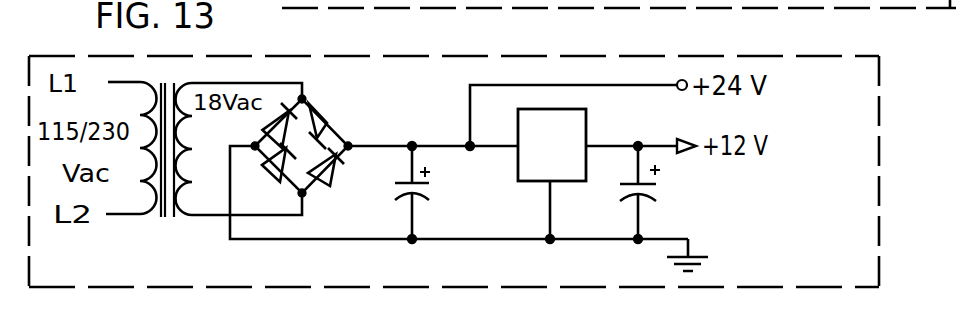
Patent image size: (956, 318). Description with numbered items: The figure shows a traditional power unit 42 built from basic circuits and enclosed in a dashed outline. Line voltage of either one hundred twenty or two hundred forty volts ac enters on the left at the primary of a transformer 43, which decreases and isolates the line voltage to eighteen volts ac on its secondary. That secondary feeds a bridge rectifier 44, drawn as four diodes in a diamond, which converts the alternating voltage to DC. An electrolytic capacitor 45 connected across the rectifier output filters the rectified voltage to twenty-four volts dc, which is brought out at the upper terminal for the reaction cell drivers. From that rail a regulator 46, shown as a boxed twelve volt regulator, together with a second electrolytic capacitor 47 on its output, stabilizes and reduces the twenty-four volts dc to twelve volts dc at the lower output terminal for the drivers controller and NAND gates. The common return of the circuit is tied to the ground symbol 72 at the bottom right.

The power unit 42 is at (342, 76).
The transformer 43 is at (164, 224).
The bridge rectifier 44 is at (341, 135).
The electrolytic capacitor 45 is at (380, 201).
The regulator 46 is at (518, 168).
The electrolytic capacitor 47 is at (666, 190).
The ground 72 is at (700, 251).